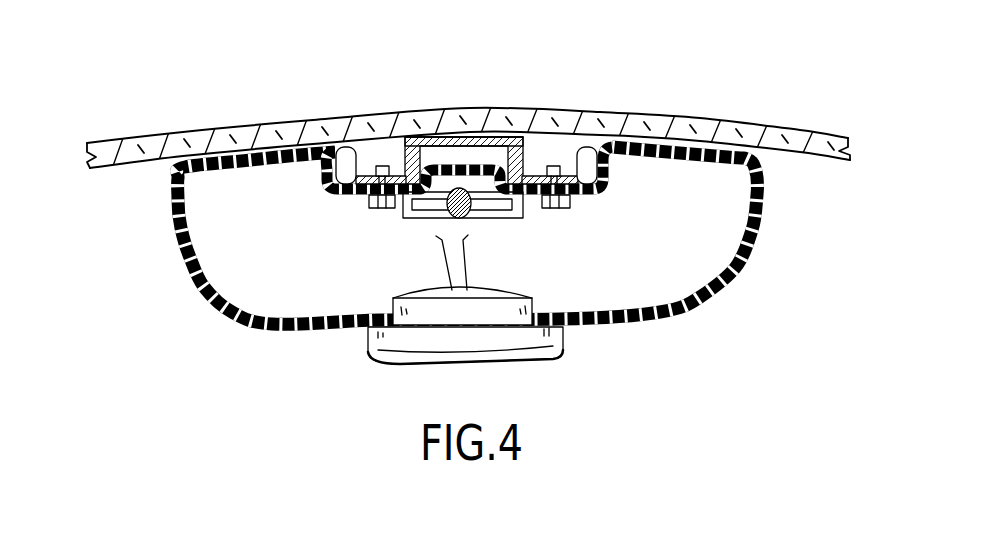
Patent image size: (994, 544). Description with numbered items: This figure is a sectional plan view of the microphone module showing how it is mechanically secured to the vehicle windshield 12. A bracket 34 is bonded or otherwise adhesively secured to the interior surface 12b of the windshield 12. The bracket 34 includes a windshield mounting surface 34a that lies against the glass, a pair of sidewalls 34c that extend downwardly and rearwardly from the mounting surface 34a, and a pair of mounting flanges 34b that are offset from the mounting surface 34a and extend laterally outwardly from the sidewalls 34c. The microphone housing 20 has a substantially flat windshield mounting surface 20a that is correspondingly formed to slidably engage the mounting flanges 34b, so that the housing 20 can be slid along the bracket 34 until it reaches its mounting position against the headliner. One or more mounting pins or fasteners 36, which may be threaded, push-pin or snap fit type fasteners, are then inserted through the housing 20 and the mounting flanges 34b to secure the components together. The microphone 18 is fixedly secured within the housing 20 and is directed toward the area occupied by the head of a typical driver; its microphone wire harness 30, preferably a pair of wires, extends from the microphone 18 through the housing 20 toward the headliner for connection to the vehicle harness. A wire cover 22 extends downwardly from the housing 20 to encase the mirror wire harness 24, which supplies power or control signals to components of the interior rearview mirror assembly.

The vehicle windshield 12 is at (126, 140).
The interior surface 12b is at (126, 166).
The microphone housing 20 is at (722, 290).
The windshield mounting surface 20a is at (262, 157).
The bracket 34 is at (528, 178).
The windshield mounting surface 34a is at (467, 137).
The sidewalls 34c is at (432, 137).
The mounting flanges 34b is at (358, 146).
The fasteners 36 is at (376, 210).
The wire cover 22 is at (427, 213).
The mirror wire harness 24 is at (485, 212).
The microphone wire harness 30 is at (462, 261).
The microphone 18 is at (527, 338).